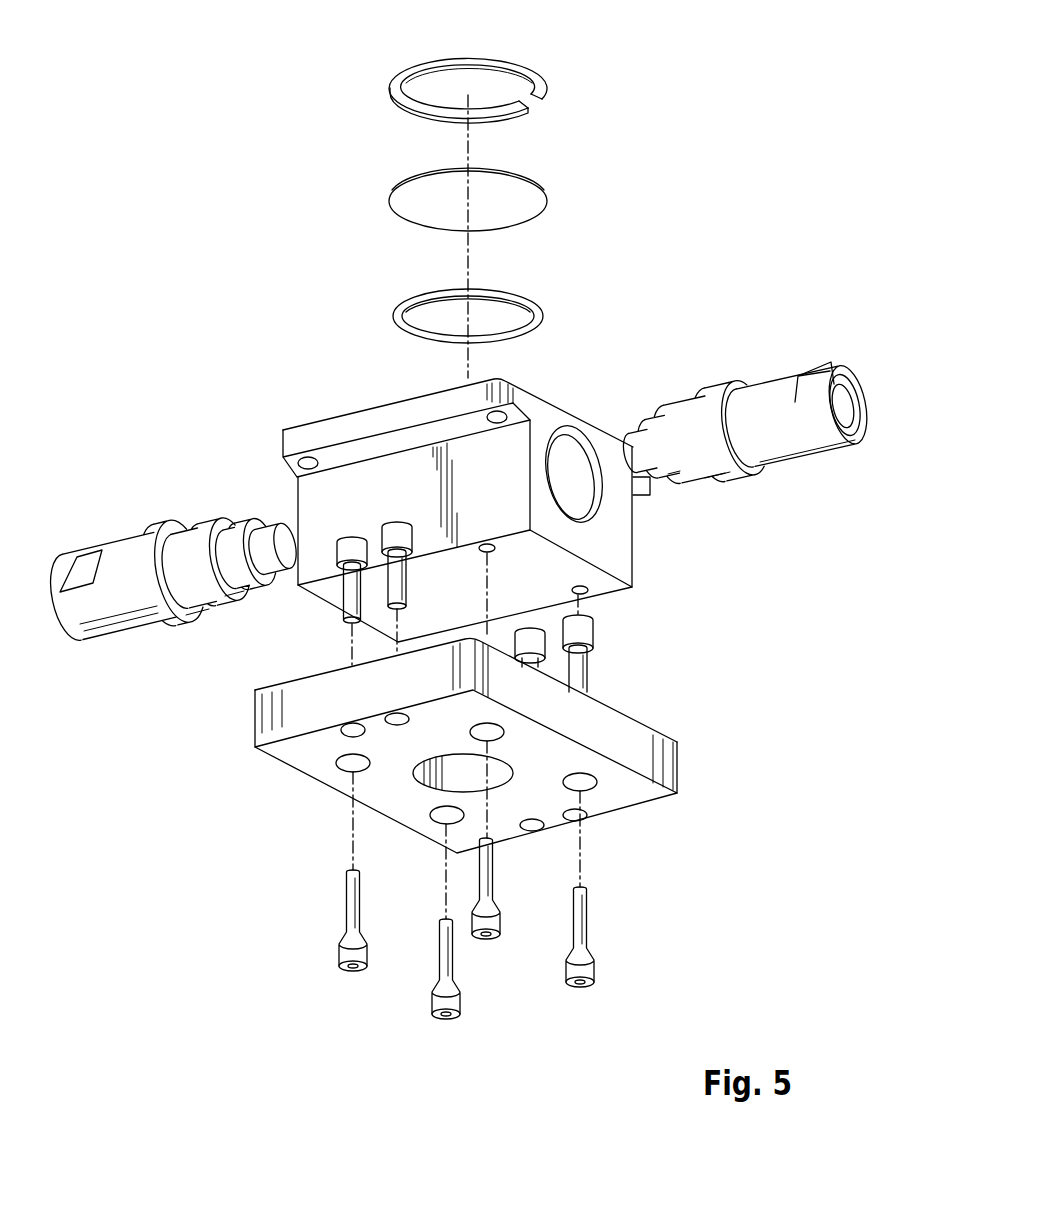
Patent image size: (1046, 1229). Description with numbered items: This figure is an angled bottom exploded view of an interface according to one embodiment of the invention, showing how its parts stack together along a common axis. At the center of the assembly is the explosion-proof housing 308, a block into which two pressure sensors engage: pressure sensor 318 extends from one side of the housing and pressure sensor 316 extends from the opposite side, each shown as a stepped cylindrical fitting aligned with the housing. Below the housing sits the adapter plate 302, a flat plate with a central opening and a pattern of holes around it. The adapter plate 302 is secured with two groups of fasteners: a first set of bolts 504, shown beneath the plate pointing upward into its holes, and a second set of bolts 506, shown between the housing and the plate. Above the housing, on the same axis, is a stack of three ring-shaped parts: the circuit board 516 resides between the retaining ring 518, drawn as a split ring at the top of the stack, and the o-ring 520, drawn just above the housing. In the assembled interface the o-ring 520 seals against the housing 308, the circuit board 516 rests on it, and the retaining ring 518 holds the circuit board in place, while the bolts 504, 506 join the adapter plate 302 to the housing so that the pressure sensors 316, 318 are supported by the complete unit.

The adapter plate 302 is at (302, 760).
The explosion-proof housing 308 is at (572, 412).
The pressure sensor 316 is at (853, 446).
The pressure sensor 318 is at (66, 574).
The first set of bolts 504 is at (346, 900).
The second set of bolts 506 is at (342, 591).
The circuit board 516 is at (400, 205).
The retaining ring 518 is at (530, 67).
The o-ring 520 is at (542, 307).